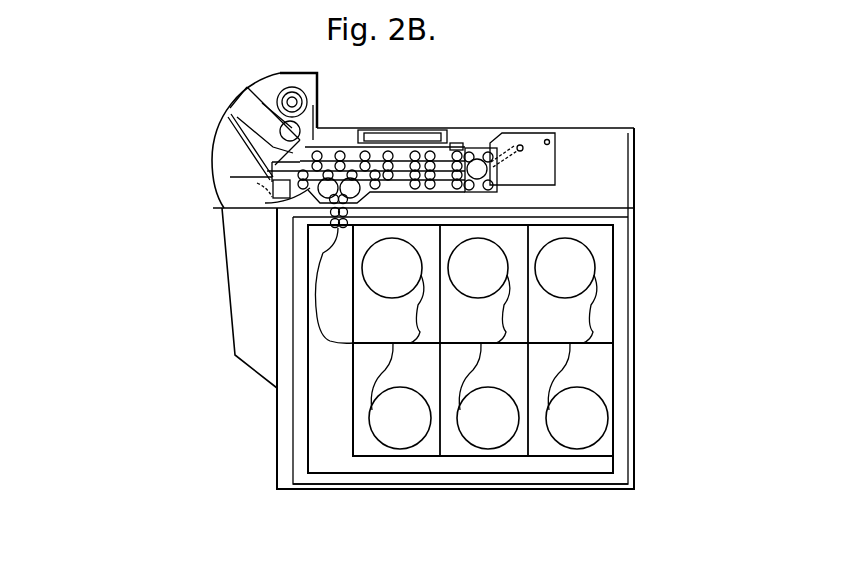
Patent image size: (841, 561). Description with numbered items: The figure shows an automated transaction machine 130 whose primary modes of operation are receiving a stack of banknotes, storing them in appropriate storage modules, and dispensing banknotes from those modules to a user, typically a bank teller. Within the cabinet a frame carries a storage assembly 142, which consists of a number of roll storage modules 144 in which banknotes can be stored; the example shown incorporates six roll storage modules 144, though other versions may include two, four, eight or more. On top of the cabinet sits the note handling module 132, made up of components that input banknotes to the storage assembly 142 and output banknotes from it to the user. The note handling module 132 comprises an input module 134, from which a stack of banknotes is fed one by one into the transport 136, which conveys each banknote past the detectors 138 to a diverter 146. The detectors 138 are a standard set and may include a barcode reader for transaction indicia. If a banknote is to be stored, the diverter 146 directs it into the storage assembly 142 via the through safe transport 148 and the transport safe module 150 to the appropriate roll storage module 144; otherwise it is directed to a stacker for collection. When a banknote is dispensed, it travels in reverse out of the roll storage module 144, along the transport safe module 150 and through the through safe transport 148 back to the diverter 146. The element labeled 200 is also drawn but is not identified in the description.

The automated transaction machine 130 is at (166, 91).
The note handling module 132 is at (643, 80).
The input module 134 is at (243, 102).
The transport 136 is at (353, 158).
The detectors 138 is at (405, 137).
The storage assembly 142 is at (643, 215).
The roll storage module 144 is at (397, 437).
The diverter 146 is at (265, 203).
The through safe transport 148 is at (330, 228).
The transport safe module 150 is at (300, 335).
The base 200 is at (562, 487).